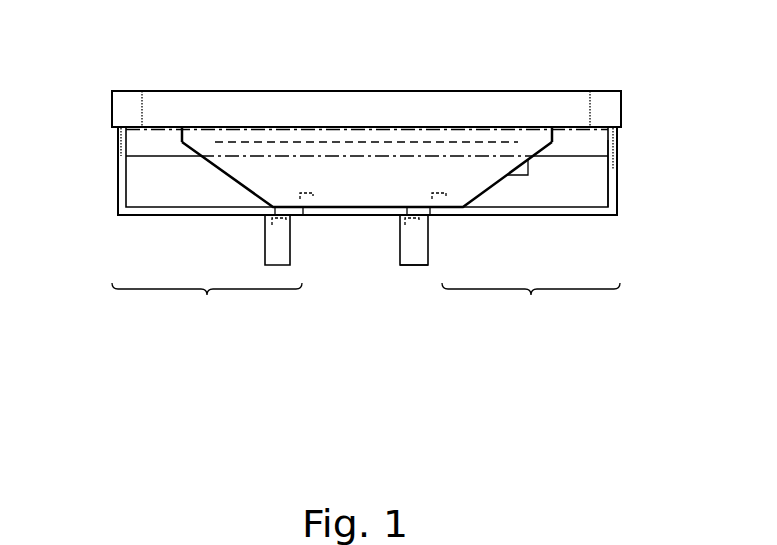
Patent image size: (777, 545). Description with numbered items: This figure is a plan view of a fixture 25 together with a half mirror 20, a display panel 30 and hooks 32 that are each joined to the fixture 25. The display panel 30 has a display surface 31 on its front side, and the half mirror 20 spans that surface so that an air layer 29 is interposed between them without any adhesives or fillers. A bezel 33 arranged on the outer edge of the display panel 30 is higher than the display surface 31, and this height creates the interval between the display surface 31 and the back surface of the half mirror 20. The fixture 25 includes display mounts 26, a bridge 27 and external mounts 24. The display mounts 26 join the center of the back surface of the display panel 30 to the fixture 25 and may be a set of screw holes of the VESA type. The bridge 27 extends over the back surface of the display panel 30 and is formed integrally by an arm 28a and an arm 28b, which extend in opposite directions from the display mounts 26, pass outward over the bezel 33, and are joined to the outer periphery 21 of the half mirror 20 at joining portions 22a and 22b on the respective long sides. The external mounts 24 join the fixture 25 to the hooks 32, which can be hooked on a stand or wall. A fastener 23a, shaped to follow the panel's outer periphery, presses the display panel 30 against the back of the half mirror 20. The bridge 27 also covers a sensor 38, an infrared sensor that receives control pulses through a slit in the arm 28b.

The half mirror 20 is at (112, 91).
The outer periphery 21 is at (605, 91).
The joining portion 22a is at (112, 127).
The joining portion 22b is at (622, 127).
The fastener 23a is at (606, 155).
The external mounts 24 is at (275, 222).
The fixture 25 is at (84, 127).
The display mounts 26 is at (300, 192).
The bridge 27 is at (617, 215).
The arm 28a is at (207, 309).
The arm 28b is at (531, 309).
The air layer 29 is at (302, 128).
The display panel 30 is at (219, 168).
The display surface 31 is at (385, 134).
The hooks 32 is at (413, 266).
The bezel 33 is at (207, 136).
The sensor 38 is at (528, 175).